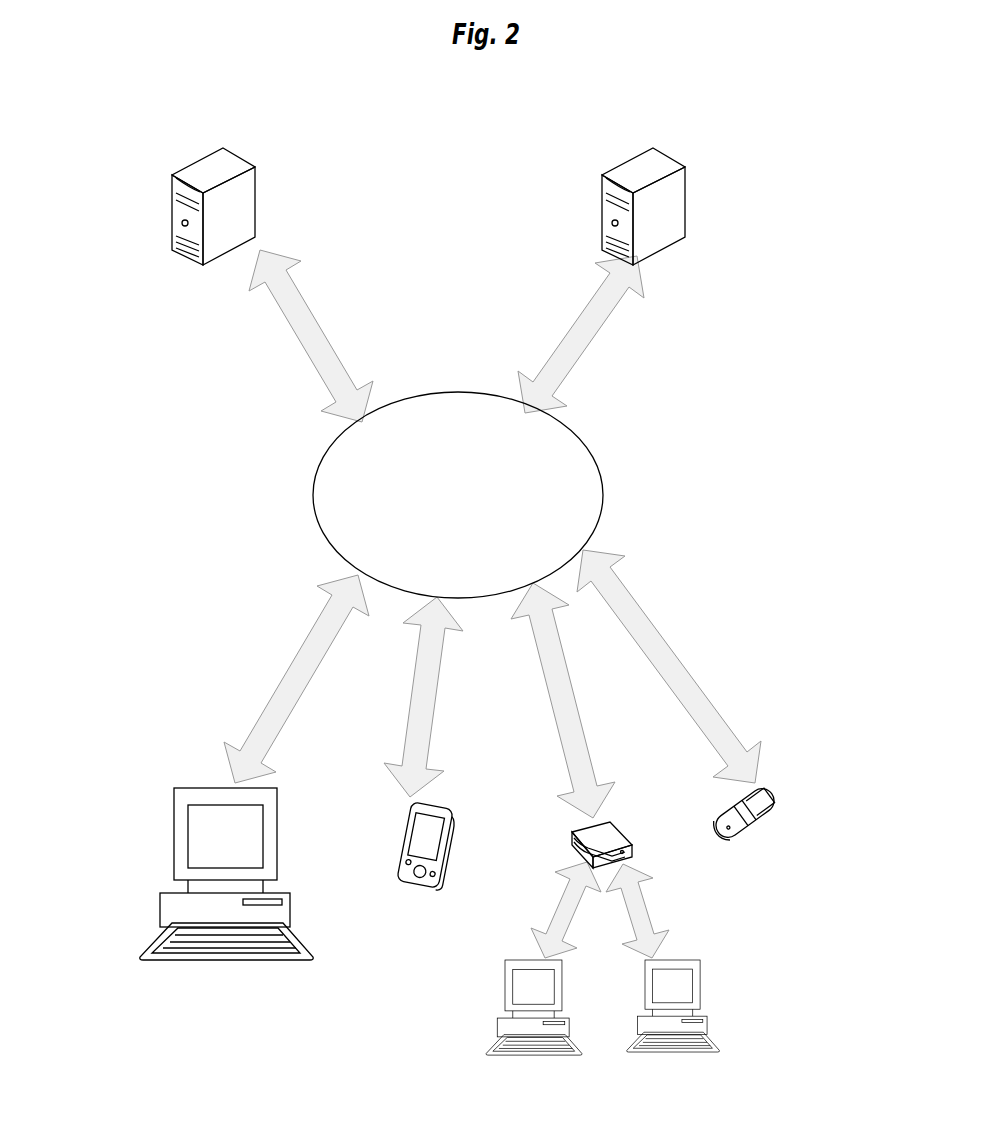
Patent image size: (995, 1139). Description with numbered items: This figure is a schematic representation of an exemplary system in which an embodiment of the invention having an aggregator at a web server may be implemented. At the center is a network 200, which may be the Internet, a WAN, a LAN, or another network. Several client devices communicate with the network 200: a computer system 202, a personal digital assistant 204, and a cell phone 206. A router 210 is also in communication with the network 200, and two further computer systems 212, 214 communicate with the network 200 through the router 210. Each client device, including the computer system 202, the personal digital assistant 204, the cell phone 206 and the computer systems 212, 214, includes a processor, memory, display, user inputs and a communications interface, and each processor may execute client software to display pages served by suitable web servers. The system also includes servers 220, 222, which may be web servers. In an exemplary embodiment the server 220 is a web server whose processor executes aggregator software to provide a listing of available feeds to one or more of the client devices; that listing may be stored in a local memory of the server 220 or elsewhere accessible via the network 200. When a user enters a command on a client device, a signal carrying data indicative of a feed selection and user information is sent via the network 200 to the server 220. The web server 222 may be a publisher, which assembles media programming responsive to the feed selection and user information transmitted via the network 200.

The network 200 is at (603, 503).
The computer system 202 is at (195, 785).
The personal digital assistant 204 is at (427, 845).
The cell phone 206 is at (745, 813).
The router 210 is at (600, 843).
The computer system 212 is at (485, 982).
The computer system 214 is at (693, 960).
The server 220 is at (213, 205).
The web server 222 is at (643, 205).